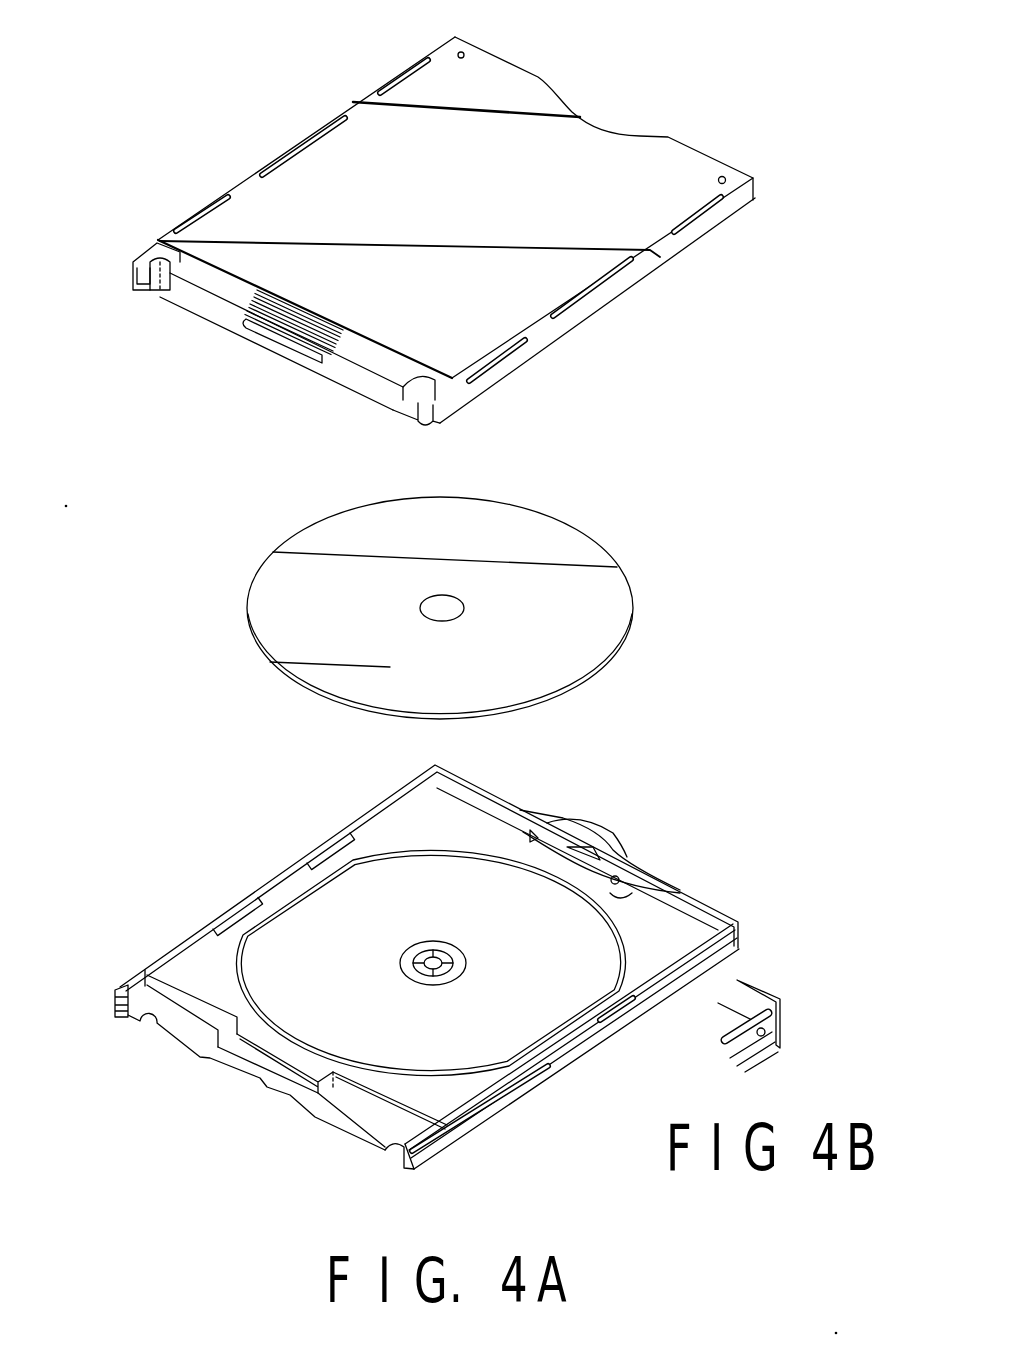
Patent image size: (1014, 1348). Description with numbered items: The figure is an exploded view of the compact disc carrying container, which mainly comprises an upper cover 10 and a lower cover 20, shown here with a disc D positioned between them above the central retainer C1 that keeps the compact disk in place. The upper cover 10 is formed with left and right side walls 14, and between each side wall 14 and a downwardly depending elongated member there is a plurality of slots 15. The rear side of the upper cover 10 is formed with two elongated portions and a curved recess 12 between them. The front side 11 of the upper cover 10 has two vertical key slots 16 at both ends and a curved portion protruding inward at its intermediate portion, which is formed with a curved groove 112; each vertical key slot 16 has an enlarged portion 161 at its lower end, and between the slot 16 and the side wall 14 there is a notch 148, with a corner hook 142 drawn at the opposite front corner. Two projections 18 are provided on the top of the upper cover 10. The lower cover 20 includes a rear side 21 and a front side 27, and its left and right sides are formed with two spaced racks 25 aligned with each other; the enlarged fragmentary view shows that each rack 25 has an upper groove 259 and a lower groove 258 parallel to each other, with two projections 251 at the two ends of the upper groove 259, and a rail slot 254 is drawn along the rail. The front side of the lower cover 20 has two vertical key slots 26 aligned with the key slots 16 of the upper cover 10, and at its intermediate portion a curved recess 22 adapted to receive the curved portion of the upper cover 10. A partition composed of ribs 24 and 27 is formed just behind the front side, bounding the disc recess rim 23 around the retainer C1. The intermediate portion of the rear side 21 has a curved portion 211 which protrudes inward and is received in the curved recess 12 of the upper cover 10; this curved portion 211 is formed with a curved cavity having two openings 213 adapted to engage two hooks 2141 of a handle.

In FIG. 4A, the upper cover 10 is at (500, 77).
In FIG. 4A, the front side 11 is at (370, 388).
In FIG. 4A, the curved recess 12 is at (570, 108).
In FIG. 4A, the side wall 14 is at (610, 296).
In FIG. 4A, the slots 15 is at (688, 231).
In FIG. 4A, the vertical key slot 16 is at (152, 289).
In FIG. 4A, the projection 18 is at (725, 178).
In FIG. 4A, the notch 148 is at (138, 285).
In FIG. 4A, the enlarged portion 161 is at (160, 294).
In FIG. 4A, the curved groove 112 is at (287, 343).
In FIG. 4A, the corner hook 142 is at (420, 424).
In FIG. 4A, the disc D is at (592, 547).
In FIG. 4A, the lower cover 20 is at (658, 922).
In FIG. 4A, the rear side 21 is at (487, 789).
In FIG. 4A, the curved portion 211 is at (607, 860).
In FIG. 4A, the openings 213 is at (632, 865).
In FIG. 4A, the hooks 2141 is at (650, 882).
In FIG. 4A, the curved recess 22 is at (267, 1083).
In FIG. 4A, the disc recess rim 23 is at (437, 865).
In FIG. 4A, the rib 24 is at (292, 913).
In FIG. 4A, the rack 25 is at (407, 1170).
In FIG. 4A, the vertical key slot 26 is at (148, 1021).
In FIG. 4A, the front side 27 is at (377, 1103).
In FIG. 4A, the rail slot 254 is at (457, 1140).
In FIG. 4A, the retainer C1 is at (467, 959).
In FIG. 4B, the projection 251 is at (757, 1033).
In FIG. 4B, the lower groove 258 is at (738, 1067).
In FIG. 4B, the upper groove 259 is at (728, 1055).